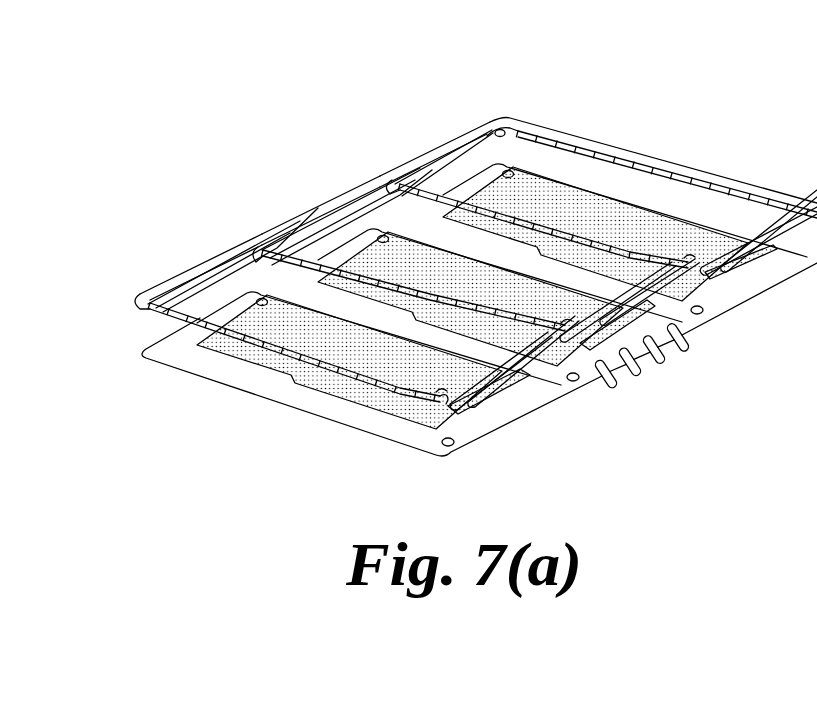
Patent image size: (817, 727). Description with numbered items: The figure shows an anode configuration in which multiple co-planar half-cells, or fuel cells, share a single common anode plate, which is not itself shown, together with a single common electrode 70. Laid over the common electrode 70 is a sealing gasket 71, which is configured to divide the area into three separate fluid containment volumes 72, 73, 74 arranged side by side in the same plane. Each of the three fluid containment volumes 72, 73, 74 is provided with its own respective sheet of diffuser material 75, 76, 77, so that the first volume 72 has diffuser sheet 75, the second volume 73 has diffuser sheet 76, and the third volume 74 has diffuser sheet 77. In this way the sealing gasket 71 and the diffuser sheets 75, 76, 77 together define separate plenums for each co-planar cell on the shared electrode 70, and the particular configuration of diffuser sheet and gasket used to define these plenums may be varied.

The common electrode 70 is at (513, 413).
The sealing gasket 71 is at (330, 207).
The fluid containment volume 72 is at (237, 285).
The fluid containment volume 73 is at (384, 213).
The fluid containment volume 74 is at (490, 158).
The sheet of diffuser material 75 is at (352, 388).
The sheet of diffuser material 76 is at (617, 320).
The sheet of diffuser material 77 is at (755, 250).